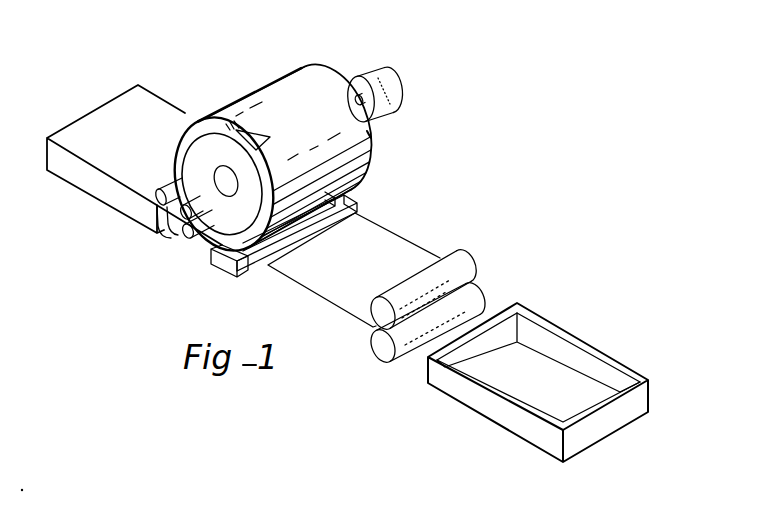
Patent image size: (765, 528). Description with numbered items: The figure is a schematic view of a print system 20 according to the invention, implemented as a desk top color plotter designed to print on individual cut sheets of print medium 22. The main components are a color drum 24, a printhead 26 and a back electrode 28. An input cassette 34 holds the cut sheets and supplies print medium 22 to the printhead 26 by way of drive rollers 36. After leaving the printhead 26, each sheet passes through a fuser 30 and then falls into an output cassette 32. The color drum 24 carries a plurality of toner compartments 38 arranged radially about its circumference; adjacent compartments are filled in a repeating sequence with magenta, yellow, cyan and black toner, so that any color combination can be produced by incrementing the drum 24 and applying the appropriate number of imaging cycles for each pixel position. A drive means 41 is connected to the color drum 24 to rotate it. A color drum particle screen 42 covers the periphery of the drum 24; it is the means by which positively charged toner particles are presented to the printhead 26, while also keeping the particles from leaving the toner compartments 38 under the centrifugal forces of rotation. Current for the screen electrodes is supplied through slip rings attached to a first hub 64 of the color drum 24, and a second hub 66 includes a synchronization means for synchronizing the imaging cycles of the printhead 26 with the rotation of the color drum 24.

The print system 20 is at (276, 52).
The print medium 22 is at (197, 238).
The color drum 24 is at (311, 72).
The printhead 26 is at (247, 268).
The back electrode 28 is at (220, 268).
The fuser 30 is at (470, 258).
The output cassette 32 is at (582, 340).
The input cassette 34 is at (92, 117).
The drive rollers 36 is at (160, 236).
The toner compartments 38 is at (256, 134).
The drive means 41 is at (393, 73).
The color drum particle screen 42 is at (332, 81).
The first hub 64 is at (222, 176).
The second hub 66 is at (372, 135).